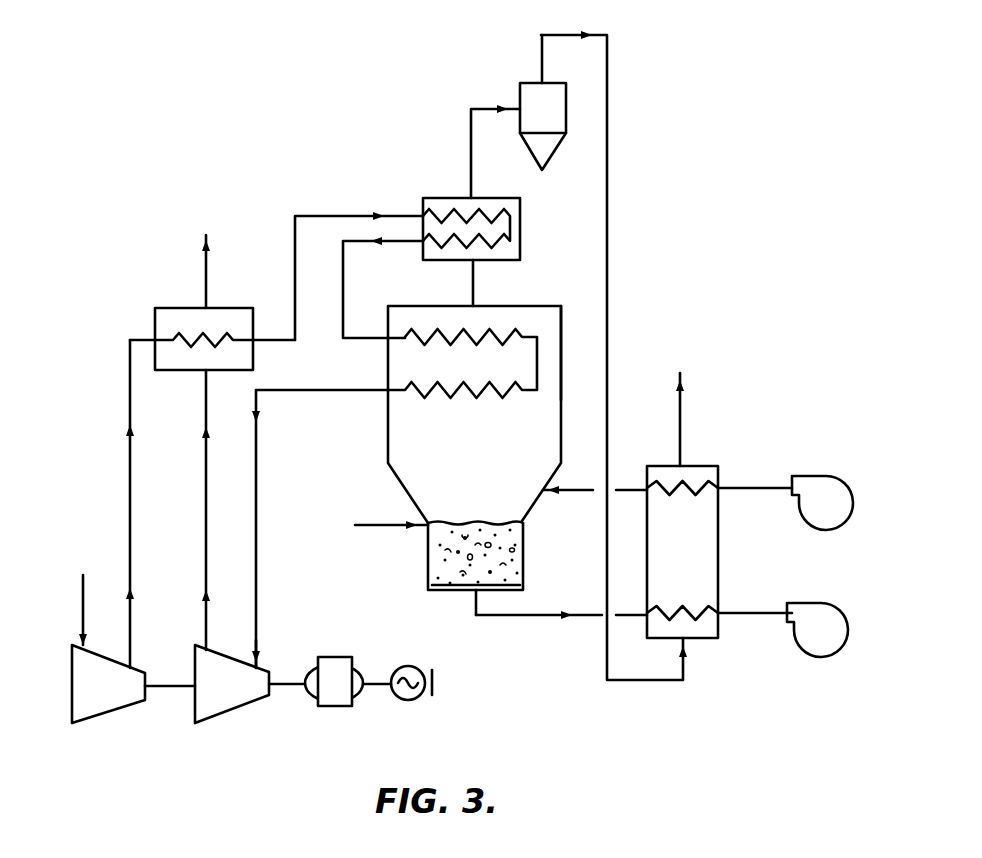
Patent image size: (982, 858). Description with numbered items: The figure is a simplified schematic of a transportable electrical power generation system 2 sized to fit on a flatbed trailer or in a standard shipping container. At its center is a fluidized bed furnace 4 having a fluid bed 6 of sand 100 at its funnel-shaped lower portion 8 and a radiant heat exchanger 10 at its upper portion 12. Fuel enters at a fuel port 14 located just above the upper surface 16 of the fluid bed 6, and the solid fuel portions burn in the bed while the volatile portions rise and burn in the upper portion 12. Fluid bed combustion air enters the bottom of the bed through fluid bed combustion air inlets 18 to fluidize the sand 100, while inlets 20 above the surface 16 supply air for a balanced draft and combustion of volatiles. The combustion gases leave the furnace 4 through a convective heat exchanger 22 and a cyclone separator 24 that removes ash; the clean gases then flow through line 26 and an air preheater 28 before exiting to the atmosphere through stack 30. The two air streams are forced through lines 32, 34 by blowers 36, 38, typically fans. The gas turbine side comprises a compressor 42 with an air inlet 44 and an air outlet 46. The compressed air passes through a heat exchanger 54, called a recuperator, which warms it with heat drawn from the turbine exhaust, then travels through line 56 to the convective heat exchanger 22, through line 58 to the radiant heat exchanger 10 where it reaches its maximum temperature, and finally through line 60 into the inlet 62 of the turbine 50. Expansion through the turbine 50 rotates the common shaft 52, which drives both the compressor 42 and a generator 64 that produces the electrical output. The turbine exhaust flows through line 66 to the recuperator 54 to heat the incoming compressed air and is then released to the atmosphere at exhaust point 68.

The transportable electrical power generation system 2 is at (777, 141).
The fluidized bed furnace 4 is at (572, 358).
The fluid bed 6 is at (490, 560).
The lower portion 8 is at (428, 558).
The radiant heat exchanger 10 is at (534, 398).
The upper portion 12 is at (561, 323).
The fuel port 14 is at (427, 525).
The upper surface 16 is at (440, 530).
The fluid bed combustion air inlets 18 is at (476, 600).
The inlets 20 is at (553, 486).
The convective heat exchanger 22 is at (522, 226).
The cyclone separator 24 is at (566, 110).
The line 26 is at (609, 187).
The air preheater 28 is at (720, 573).
The stack 30 is at (680, 408).
The line 32 is at (578, 617).
The line 34 is at (745, 488).
The blower 36 is at (822, 607).
The blower 38 is at (828, 480).
The compressor 42 is at (72, 693).
The air inlet 44 is at (83, 640).
The air outlet 46 is at (130, 467).
The turbine 50 is at (263, 700).
The common shaft 52 is at (175, 690).
The heat exchanger 54 is at (173, 308).
The line 56 is at (318, 214).
The line 58 is at (343, 290).
The line 60 is at (256, 467).
The inlet 62 is at (262, 668).
The generator 64 is at (335, 706).
The line 66 is at (206, 469).
The exhaust point 68 is at (206, 270).
The sand 100 is at (447, 575).